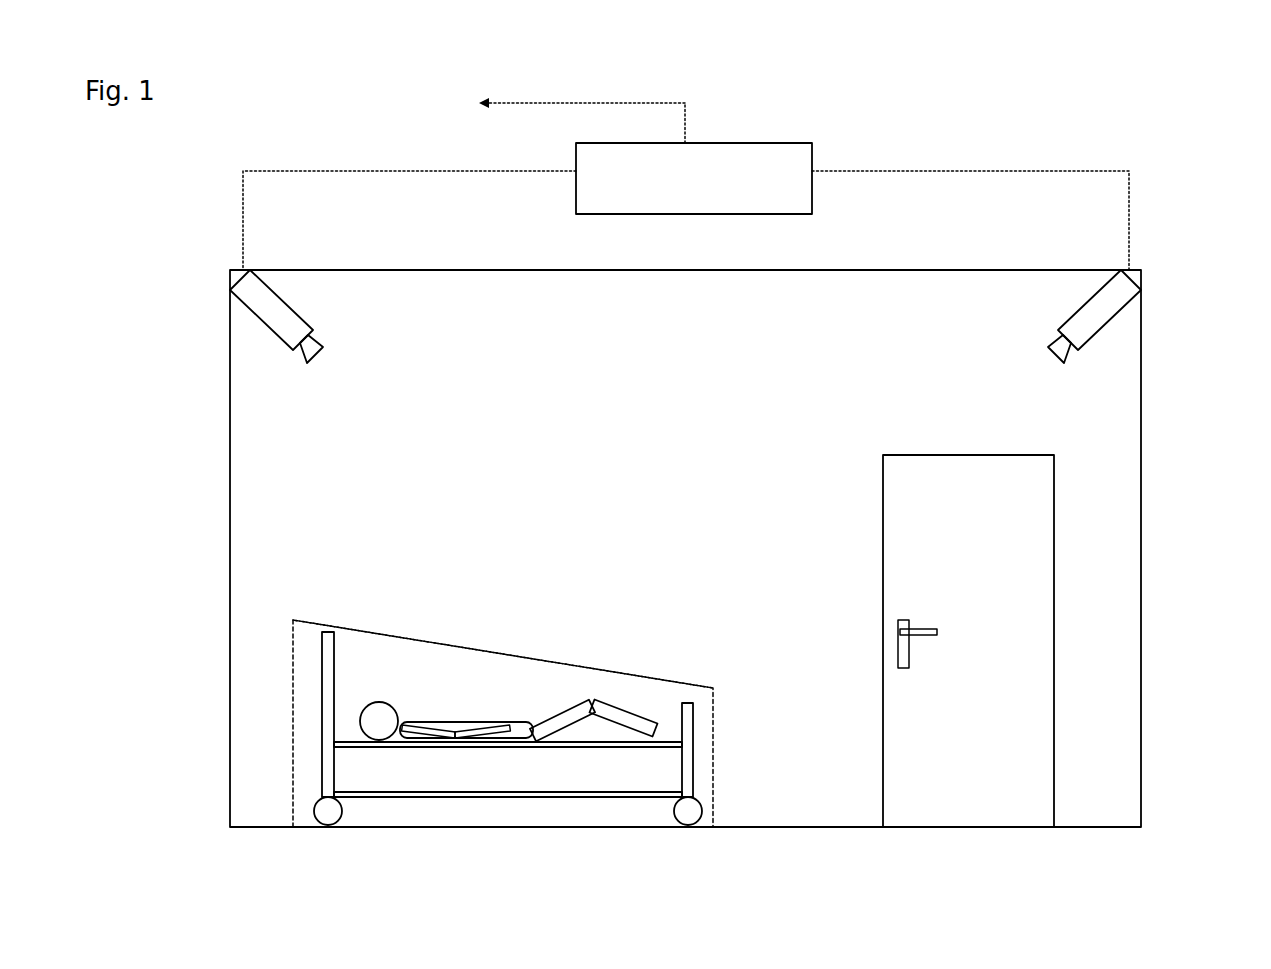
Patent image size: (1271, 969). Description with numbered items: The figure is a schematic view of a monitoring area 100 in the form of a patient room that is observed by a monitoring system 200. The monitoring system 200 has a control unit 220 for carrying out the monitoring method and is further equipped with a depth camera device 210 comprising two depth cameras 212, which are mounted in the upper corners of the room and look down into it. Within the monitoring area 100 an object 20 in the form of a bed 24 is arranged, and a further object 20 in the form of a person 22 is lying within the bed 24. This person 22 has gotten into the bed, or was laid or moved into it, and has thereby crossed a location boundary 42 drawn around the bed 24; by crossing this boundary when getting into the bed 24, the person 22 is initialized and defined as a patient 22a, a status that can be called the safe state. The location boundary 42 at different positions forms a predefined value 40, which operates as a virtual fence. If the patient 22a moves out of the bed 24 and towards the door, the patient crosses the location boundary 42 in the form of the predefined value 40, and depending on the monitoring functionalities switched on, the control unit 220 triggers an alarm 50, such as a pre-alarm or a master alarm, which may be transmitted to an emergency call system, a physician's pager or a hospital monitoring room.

The monitoring area 100 is at (230, 600).
The monitoring system 200 is at (915, 115).
The control unit 220 is at (760, 145).
The alarm 50 is at (553, 101).
The depth camera device 210 is at (730, 362).
The depth camera 212 is at (686, 333).
The predefined value 40 is at (541, 755).
The location boundary 42 is at (700, 687).
The object 20 is at (508, 727).
The bed 24 is at (455, 780).
The person 22 is at (509, 669).
The patient 22a is at (510, 720).